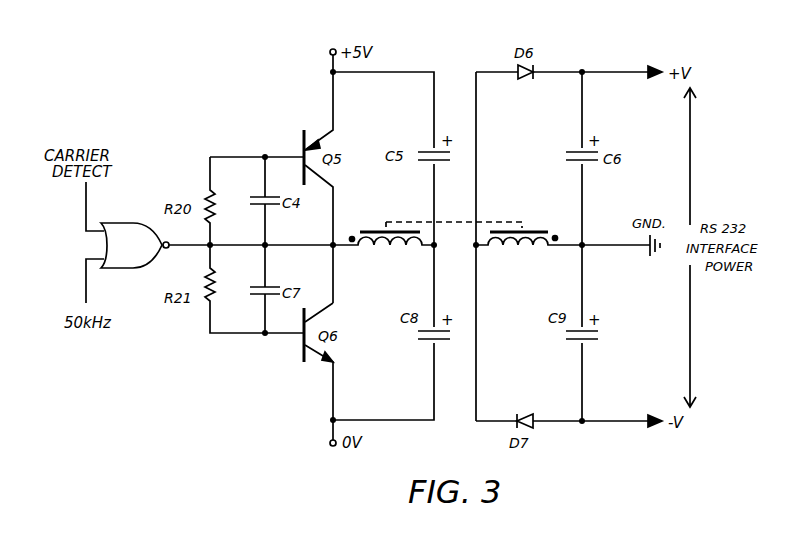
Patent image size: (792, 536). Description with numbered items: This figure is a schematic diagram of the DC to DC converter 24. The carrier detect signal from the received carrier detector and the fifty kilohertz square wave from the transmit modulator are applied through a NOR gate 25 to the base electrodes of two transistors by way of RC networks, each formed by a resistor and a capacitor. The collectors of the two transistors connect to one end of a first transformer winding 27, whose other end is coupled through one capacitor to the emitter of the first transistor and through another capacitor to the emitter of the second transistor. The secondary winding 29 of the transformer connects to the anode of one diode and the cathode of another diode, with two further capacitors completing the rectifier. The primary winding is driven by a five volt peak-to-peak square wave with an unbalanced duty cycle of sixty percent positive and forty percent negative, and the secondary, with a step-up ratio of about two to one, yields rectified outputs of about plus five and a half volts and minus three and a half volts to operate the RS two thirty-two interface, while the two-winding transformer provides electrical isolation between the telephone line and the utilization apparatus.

The DC to DC converter 24 is at (205, 374).
The NOR gate 25 is at (157, 252).
The first transformer winding 27 is at (394, 250).
The secondary winding 29 is at (515, 250).